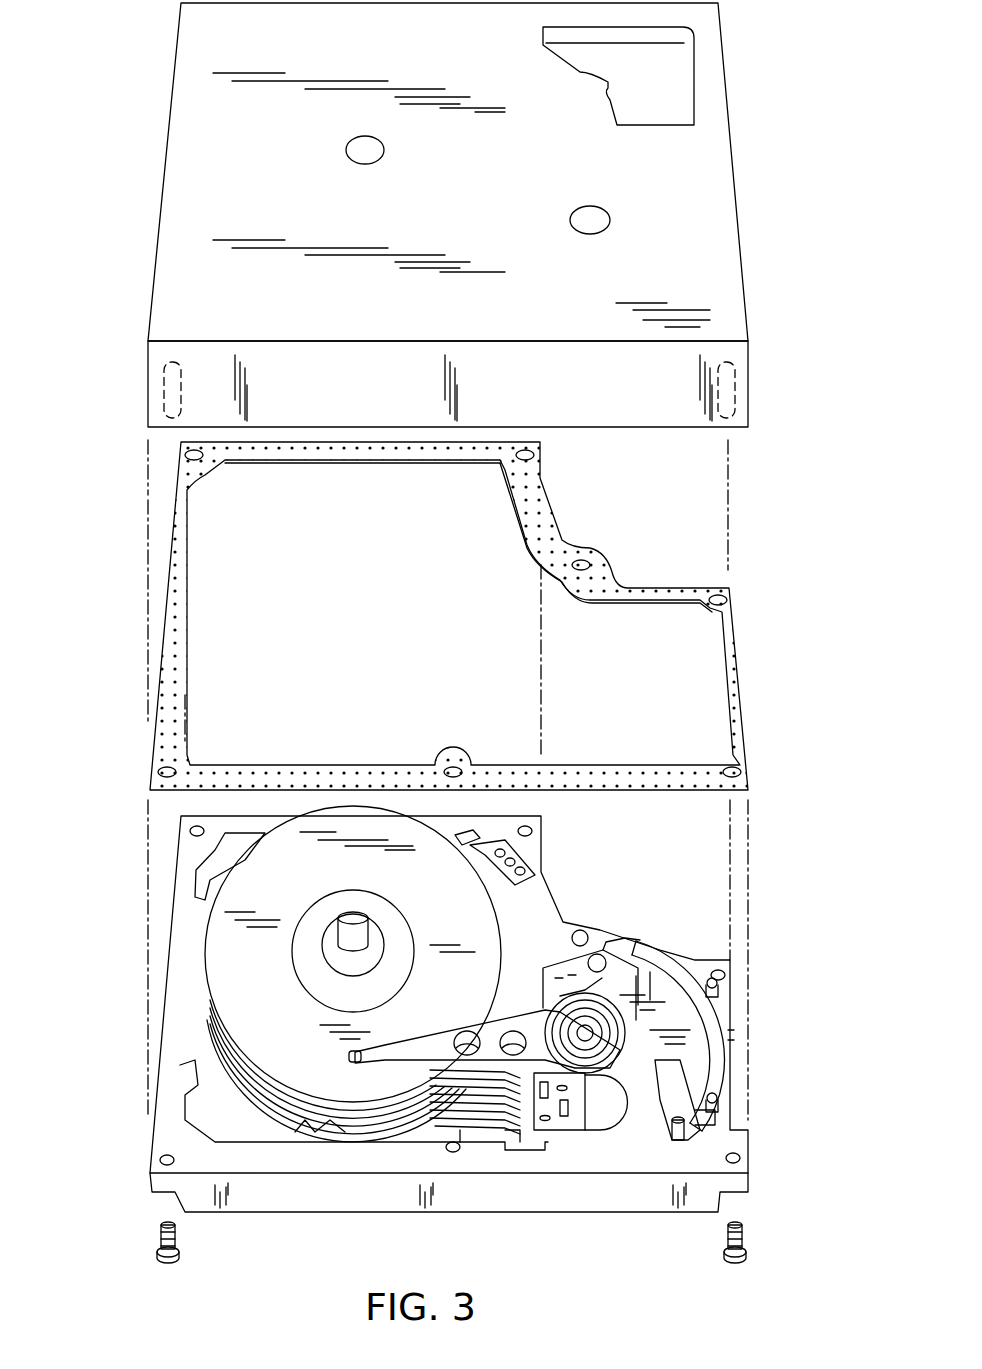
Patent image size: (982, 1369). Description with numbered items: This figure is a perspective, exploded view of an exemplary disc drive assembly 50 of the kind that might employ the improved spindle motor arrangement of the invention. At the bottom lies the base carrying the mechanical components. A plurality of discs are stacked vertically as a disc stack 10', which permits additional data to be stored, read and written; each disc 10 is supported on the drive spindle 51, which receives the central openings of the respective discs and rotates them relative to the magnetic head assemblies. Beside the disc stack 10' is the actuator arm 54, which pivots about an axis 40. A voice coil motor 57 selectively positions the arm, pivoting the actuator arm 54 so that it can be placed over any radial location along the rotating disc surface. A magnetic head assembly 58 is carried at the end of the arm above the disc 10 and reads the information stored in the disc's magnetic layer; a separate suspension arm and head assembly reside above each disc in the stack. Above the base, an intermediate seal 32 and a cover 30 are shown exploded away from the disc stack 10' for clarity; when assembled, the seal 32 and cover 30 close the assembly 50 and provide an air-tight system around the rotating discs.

The disc drive assembly 50 is at (128, 72).
The cover 30 is at (737, 185).
The intermediate seal 32 is at (740, 655).
The actuator arm 54 is at (490, 1128).
The disc 10 is at (265, 974).
The disc stack 10' is at (265, 954).
The drive spindle 51 is at (330, 952).
The axis 40 is at (600, 1027).
The voice coil motor 57 is at (742, 1063).
The magnetic head assembly 58 is at (352, 1064).